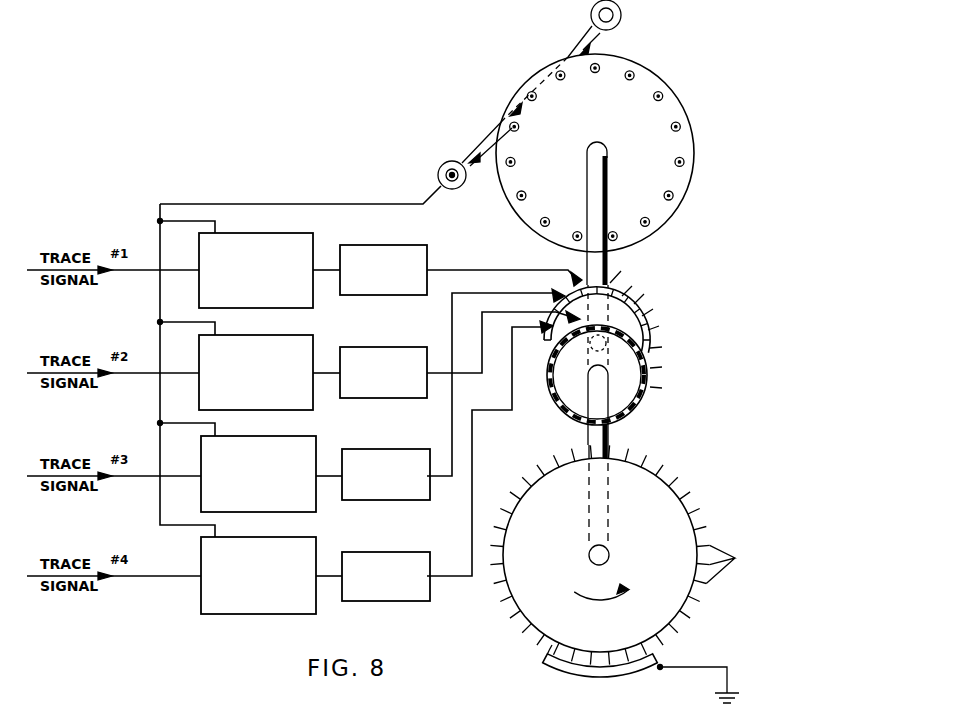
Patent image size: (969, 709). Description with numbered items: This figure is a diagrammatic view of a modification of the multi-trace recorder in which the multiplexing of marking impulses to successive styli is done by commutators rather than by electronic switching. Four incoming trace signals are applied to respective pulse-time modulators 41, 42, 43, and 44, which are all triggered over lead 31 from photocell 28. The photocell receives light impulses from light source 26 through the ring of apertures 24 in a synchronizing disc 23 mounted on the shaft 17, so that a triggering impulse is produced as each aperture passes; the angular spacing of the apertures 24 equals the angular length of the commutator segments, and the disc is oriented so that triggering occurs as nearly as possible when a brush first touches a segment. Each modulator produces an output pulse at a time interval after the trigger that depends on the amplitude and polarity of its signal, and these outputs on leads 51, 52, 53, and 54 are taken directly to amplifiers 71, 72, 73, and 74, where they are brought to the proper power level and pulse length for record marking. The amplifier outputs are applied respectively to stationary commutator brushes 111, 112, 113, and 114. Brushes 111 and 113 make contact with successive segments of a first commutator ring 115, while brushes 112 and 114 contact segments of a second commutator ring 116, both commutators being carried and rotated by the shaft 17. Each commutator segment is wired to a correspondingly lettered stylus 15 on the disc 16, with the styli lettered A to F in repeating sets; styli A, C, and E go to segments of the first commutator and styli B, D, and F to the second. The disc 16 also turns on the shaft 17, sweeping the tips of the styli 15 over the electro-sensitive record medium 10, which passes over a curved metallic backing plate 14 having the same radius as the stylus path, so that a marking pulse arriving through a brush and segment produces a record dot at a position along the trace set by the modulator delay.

The record-receiving medium 10 is at (546, 662).
The curved metallic backing plate 14 is at (615, 685).
The styli 15 is at (732, 564).
The disc 16 is at (661, 497).
The shaft 17 is at (608, 168).
The synchronizing disc 23 is at (655, 82).
The apertures 24 is at (684, 160).
The light source 26 is at (622, 15).
The photocell 28 is at (443, 166).
The lead 31 is at (315, 204).
The pulse-time modulator 41 is at (260, 233).
The pulse-time modulator 42 is at (275, 335).
The pulse-time modulator 43 is at (285, 436).
The pulse-time modulator 44 is at (287, 537).
The modulator output lead 51 is at (323, 270).
The modulator output lead 52 is at (324, 373).
The modulator output lead 53 is at (325, 476).
The modulator output lead 54 is at (330, 576).
The amplifier 71 is at (406, 245).
The amplifier 72 is at (408, 347).
The amplifier 73 is at (408, 449).
The amplifier 74 is at (412, 552).
The stationary commutator brush 111 is at (567, 276).
The stationary commutator brush 112 is at (532, 315).
The stationary commutator brush 113 is at (548, 297).
The stationary commutator brush 114 is at (549, 330).
The first commutator ring 115 is at (646, 352).
The second commutator ring 116 is at (630, 397).